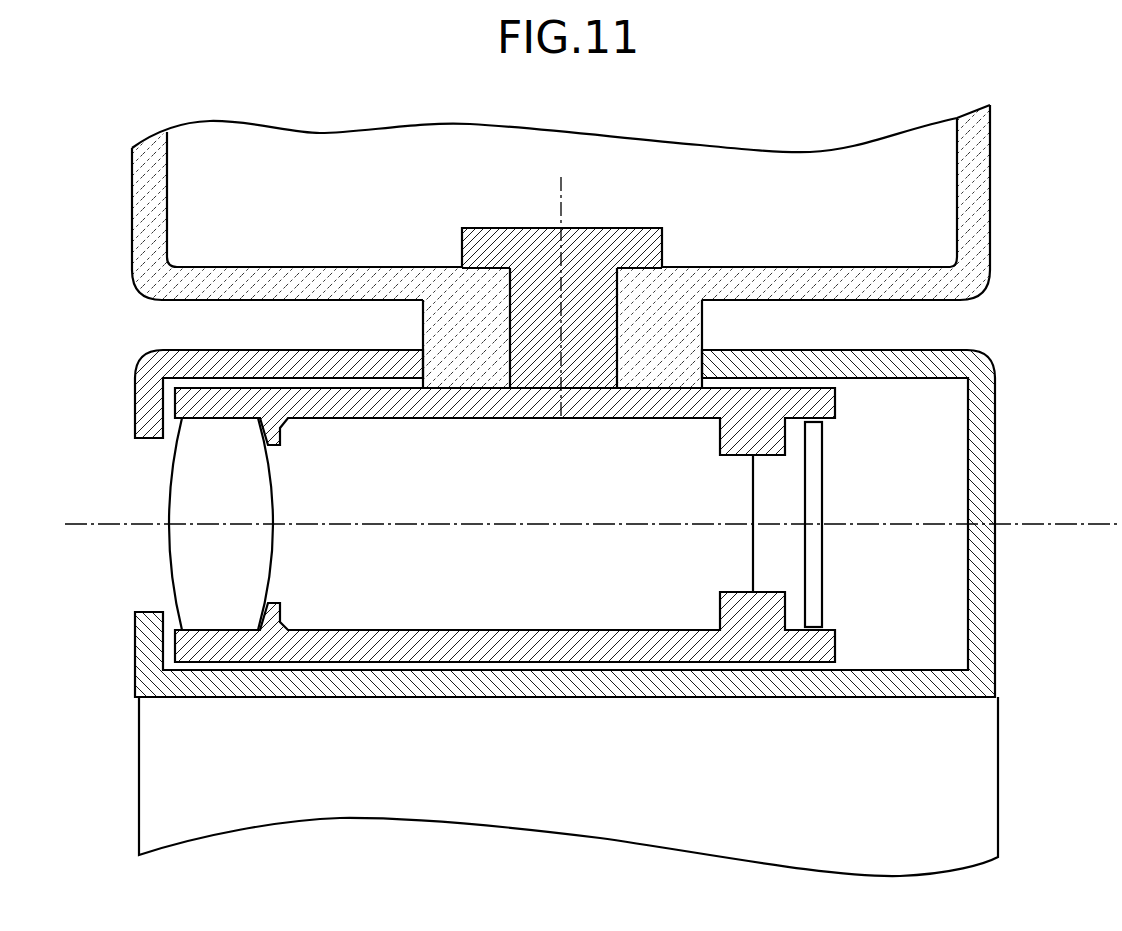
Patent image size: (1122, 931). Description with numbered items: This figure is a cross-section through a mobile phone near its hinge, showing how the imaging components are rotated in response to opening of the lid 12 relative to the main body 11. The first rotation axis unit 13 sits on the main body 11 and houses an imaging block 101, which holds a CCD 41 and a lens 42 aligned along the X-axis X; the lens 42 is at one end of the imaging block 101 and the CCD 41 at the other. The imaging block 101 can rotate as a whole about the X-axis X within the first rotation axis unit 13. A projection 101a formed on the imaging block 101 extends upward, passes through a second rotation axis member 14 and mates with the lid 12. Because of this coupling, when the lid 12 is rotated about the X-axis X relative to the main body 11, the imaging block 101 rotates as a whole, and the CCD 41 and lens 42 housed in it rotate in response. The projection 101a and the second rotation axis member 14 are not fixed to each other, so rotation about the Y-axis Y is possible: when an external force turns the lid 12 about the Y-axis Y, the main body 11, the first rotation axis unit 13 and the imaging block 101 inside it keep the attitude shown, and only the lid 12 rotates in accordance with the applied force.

The main body 11 is at (413, 787).
The lid 12 is at (190, 167).
The first rotation axis unit 13 is at (985, 455).
The second rotation axis member 14 is at (705, 322).
The CCD 41 is at (785, 567).
The lens 42 is at (200, 502).
The imaging block 101 is at (198, 403).
The projection 101a is at (547, 335).
The X-axis X is at (108, 527).
The Y-axis Y is at (590, 228).